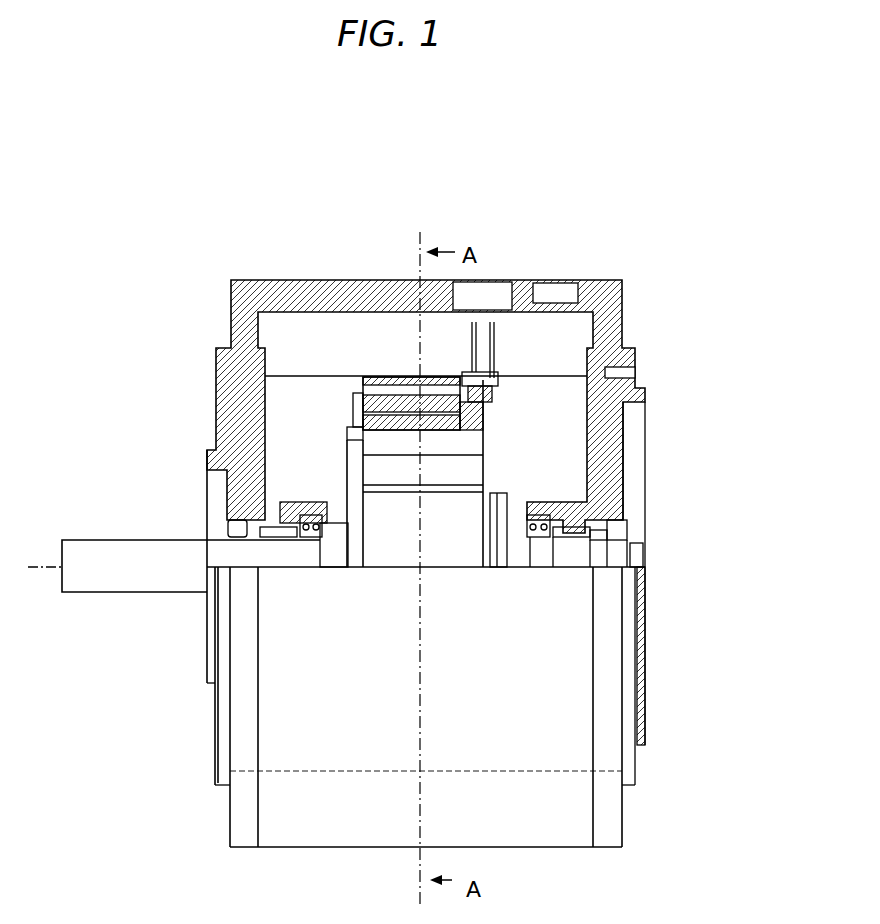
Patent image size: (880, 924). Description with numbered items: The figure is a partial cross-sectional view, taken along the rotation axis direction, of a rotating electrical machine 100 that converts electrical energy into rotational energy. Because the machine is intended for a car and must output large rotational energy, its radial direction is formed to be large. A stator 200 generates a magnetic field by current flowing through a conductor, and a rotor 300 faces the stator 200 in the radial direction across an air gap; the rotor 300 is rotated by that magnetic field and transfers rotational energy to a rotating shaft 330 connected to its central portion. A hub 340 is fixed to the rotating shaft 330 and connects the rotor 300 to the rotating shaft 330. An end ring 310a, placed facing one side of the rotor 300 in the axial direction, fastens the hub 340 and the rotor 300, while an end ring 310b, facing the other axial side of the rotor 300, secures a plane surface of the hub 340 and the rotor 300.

The rotating electrical machine 100 is at (126, 144).
The stator 200 is at (375, 390).
The rotor 300 is at (490, 440).
The end ring 310a is at (497, 450).
The end ring 310b is at (357, 442).
The rotating shaft 330 is at (612, 548).
The hub 340 is at (470, 465).